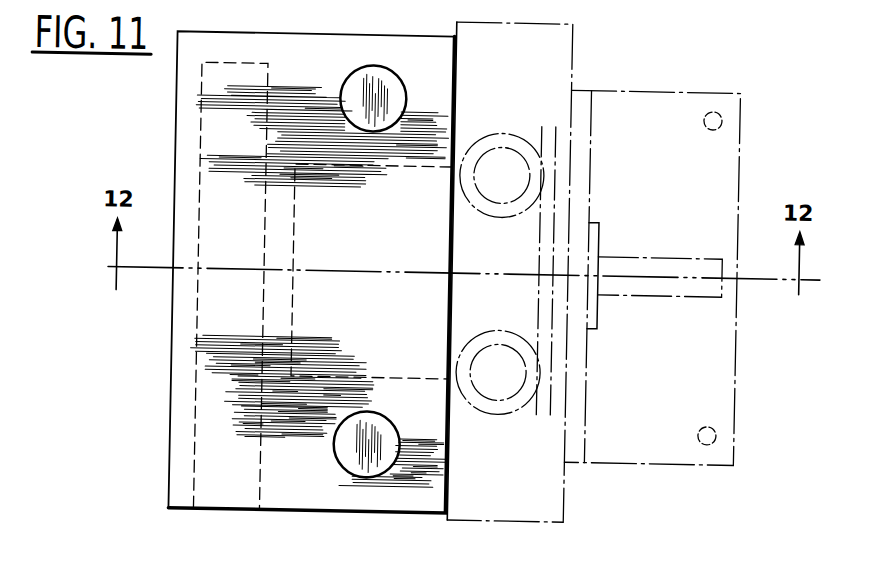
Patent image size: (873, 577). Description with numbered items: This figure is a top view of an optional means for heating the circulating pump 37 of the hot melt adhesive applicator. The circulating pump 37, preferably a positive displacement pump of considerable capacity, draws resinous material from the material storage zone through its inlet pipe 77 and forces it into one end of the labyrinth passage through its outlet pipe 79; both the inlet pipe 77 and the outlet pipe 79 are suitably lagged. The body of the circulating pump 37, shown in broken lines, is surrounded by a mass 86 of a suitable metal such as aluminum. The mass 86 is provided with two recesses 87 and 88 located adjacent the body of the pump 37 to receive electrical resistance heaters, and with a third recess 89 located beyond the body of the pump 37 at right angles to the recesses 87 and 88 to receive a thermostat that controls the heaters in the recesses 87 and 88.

The mass of metal 86 is at (327, 47).
The recess 87 is at (390, 89).
The recess 88 is at (359, 462).
The third recess 89 is at (218, 484).
The inlet pipe 77 is at (500, 156).
The outlet pipe 79 is at (499, 379).
The circulating pump 37 is at (532, 490).